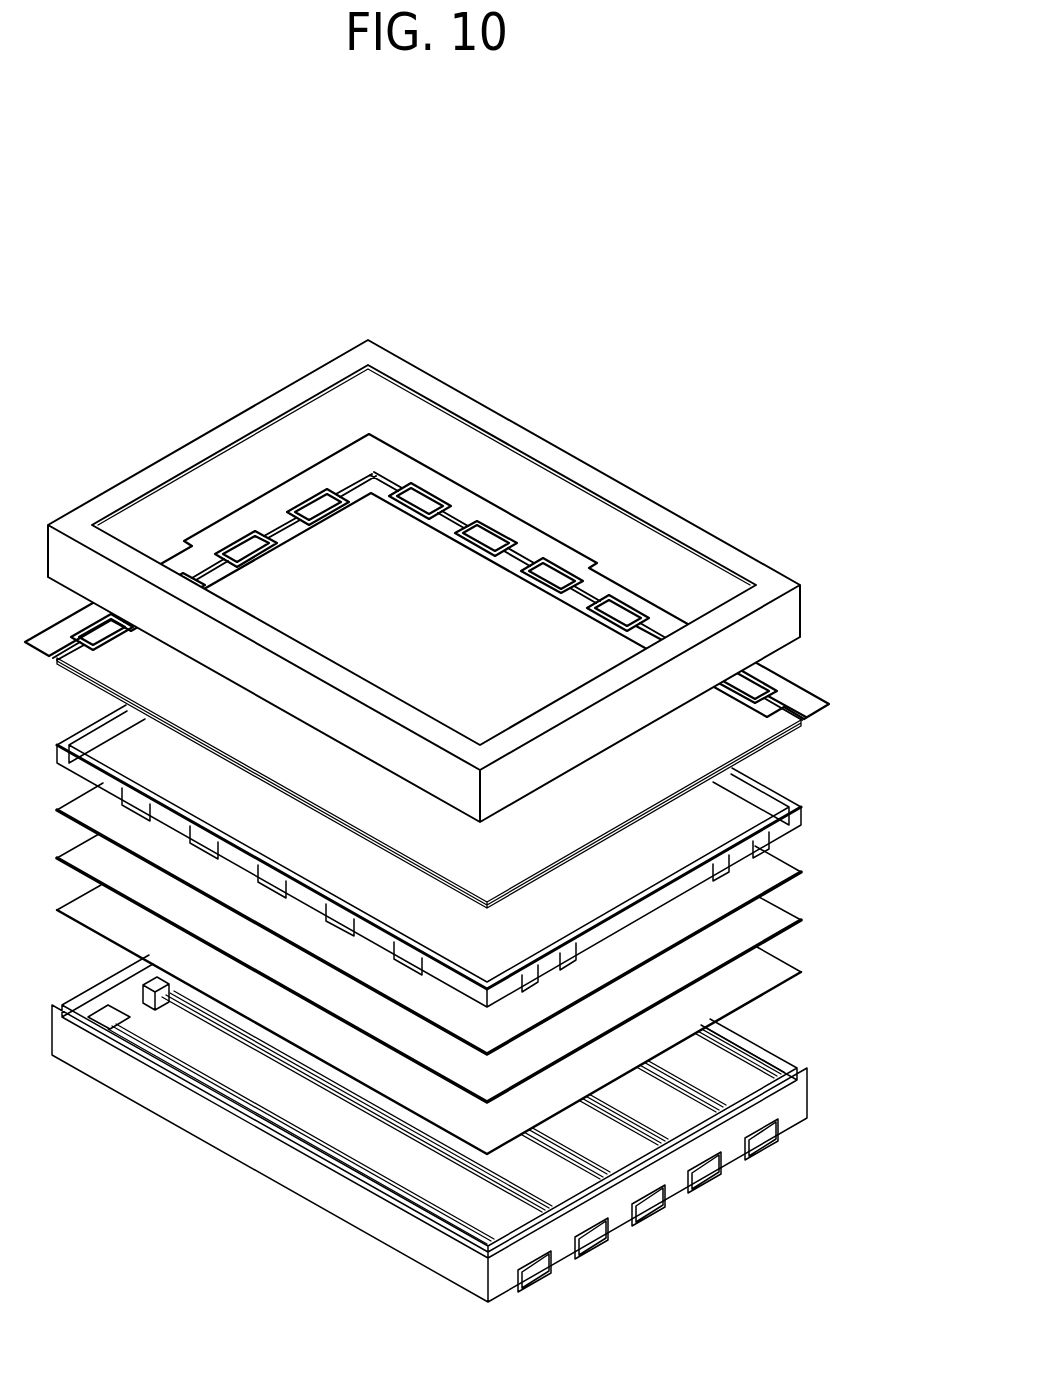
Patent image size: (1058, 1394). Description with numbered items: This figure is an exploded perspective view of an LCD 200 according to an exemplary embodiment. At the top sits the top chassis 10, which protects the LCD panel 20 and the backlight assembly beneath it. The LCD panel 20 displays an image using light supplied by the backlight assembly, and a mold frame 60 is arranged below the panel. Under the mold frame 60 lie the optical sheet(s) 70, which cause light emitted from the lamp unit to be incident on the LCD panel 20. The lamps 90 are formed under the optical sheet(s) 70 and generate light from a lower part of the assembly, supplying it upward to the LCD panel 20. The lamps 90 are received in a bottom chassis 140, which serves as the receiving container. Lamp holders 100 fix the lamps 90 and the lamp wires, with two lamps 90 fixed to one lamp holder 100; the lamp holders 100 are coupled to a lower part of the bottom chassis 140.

The LCD 200 is at (862, 238).
The top chassis 10 is at (793, 615).
The LCD panel 20 is at (785, 717).
The mold frame 60 is at (793, 817).
The optical sheet 70 is at (783, 878).
The lamps 90 is at (673, 1073).
The bottom chassis 140 is at (798, 1093).
The lamp holder 100 is at (780, 1127).